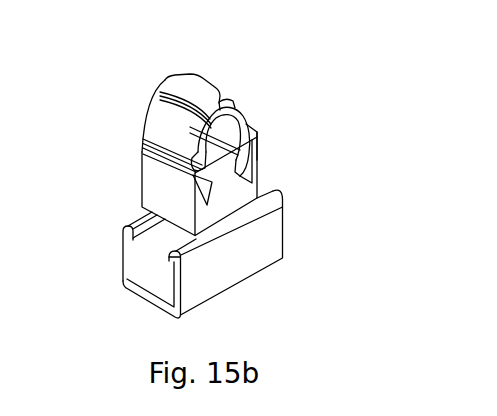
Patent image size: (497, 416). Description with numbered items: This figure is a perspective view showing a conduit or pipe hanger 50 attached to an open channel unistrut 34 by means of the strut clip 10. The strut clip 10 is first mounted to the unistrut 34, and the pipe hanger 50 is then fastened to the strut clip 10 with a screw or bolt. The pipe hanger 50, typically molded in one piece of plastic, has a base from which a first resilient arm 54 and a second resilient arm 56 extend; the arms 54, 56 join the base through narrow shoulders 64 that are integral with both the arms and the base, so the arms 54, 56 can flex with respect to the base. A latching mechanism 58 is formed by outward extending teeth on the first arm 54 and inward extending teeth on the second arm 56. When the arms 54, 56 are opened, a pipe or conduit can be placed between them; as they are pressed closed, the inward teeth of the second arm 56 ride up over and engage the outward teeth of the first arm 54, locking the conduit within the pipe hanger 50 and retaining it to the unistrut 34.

The strut clip 10 is at (230, 227).
The unistrut 34 is at (283, 228).
The pipe hanger 50 is at (260, 173).
The first resilient arm 54 is at (253, 113).
The second resilient arm 56 is at (160, 120).
The latching mechanism 58 is at (218, 112).
The narrow shoulders 64 is at (170, 153).